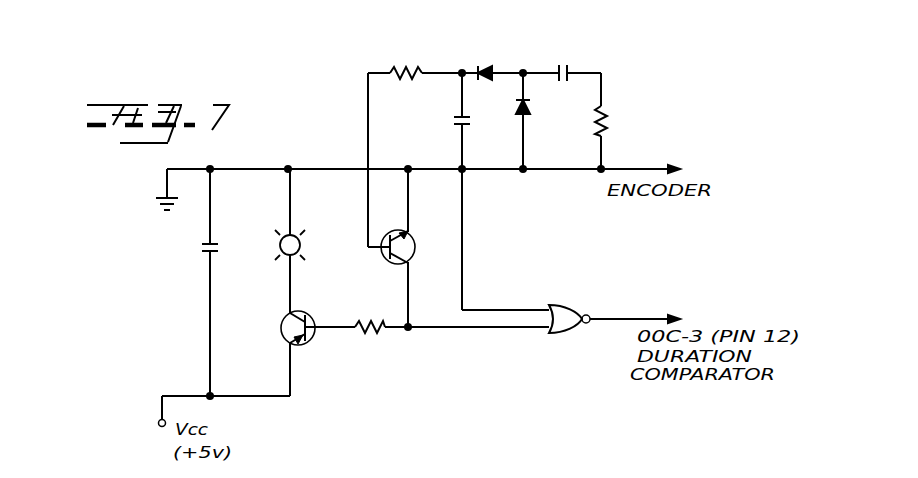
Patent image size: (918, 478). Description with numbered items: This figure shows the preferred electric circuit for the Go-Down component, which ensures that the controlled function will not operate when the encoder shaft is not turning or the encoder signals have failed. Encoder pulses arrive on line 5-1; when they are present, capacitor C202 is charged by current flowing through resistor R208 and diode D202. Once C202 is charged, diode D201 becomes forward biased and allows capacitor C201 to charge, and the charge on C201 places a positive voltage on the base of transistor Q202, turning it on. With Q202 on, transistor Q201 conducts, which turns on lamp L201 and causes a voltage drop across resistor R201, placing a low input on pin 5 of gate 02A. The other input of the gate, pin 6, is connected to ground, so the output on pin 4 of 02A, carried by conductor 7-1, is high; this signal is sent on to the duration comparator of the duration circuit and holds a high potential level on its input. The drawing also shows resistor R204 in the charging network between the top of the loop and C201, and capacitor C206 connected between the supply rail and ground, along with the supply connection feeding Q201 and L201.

The resistor 22K R204 is at (401, 68).
The diode D201 is at (485, 70).
The capacitor C202 is at (570, 72).
The resistor R208 is at (608, 117).
The capacitor C201 is at (456, 123).
The diode D202 is at (532, 105).
The transistor Q202 is at (421, 251).
The lamp L201 is at (300, 250).
The resistor R201 is at (353, 313).
The transistor Q201 is at (310, 340).
The capacitor 100 C206 is at (212, 253).
The gate 02A is at (553, 337).
The gate input pin 6 is at (533, 302).
The pin 5 of gate 02A 5 is at (533, 343).
The pin 4 of gate 02A 4 is at (594, 310).
The line 5-1 is at (661, 167).
The conductor 7-1 is at (628, 318).